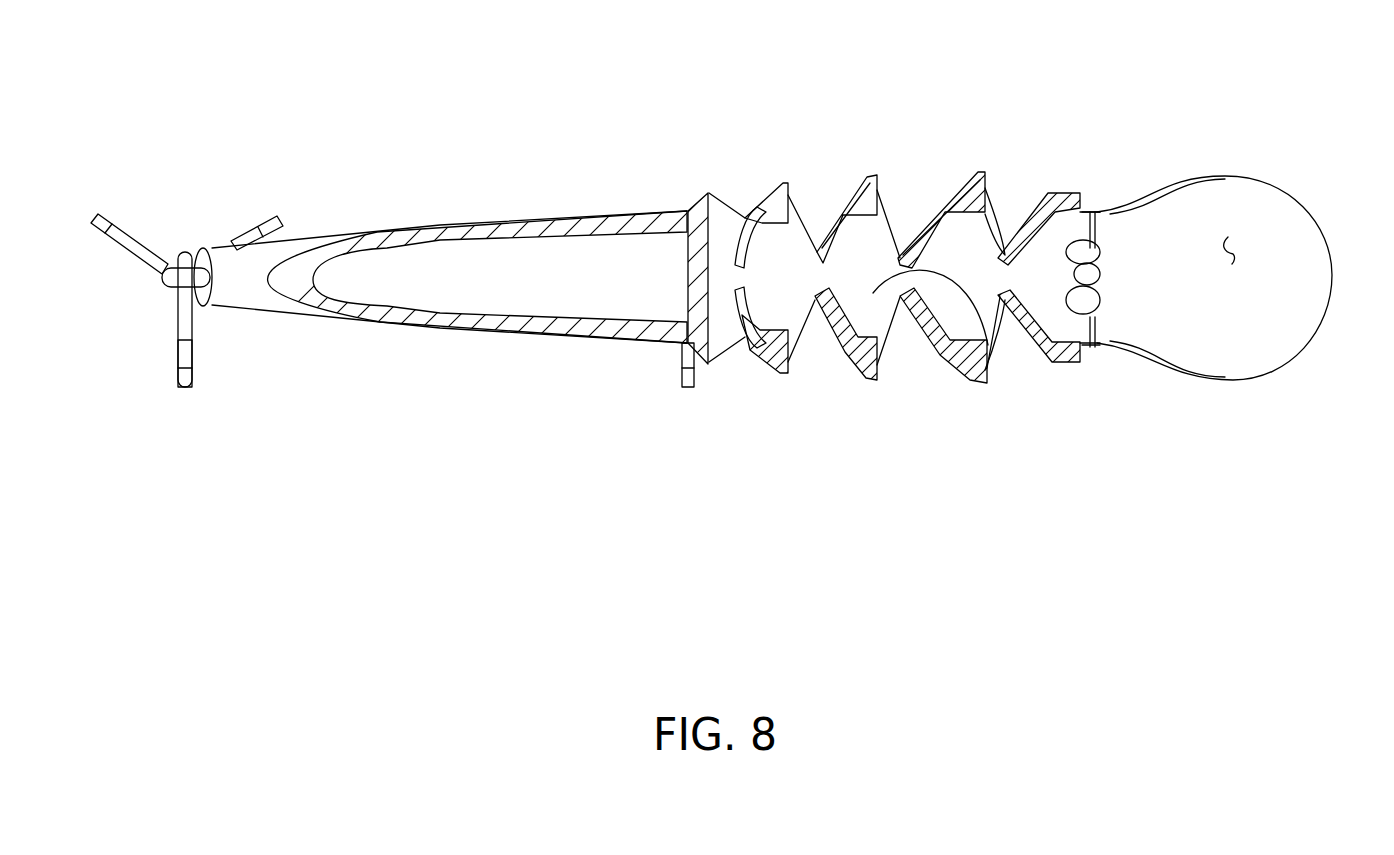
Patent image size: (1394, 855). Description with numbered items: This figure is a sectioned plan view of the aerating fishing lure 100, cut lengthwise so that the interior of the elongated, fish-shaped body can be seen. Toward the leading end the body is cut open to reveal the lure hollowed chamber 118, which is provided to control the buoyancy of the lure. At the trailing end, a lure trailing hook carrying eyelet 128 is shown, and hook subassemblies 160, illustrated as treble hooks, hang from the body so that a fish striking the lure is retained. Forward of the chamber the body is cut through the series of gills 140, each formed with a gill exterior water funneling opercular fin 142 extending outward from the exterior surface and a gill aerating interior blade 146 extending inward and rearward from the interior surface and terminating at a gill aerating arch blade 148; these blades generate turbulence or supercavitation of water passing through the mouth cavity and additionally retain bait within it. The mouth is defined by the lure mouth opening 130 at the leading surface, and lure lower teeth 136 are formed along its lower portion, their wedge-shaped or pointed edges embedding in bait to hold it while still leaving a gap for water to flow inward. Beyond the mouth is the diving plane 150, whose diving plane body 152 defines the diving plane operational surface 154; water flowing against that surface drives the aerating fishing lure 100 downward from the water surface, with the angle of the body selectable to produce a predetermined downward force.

The aerating fishing lure 100 is at (412, 150).
The lure hollowed chamber 118 is at (540, 273).
The lure trailing hook carrying eyelet 128 is at (163, 290).
The lure mouth opening 130 is at (1097, 342).
The lure lower teeth 136 is at (1090, 250).
The gills 140 is at (953, 183).
The gill exterior water funneling opercular fin 142 is at (997, 218).
The gill aerating interior blade 146 is at (1055, 332).
The gill aerating arch blade 148 is at (810, 262).
The diving plane 150 is at (1287, 392).
The diving plane body 152 is at (1303, 200).
The diving plane operational surface 154 is at (1235, 250).
The hook subassembly 160 is at (207, 373).